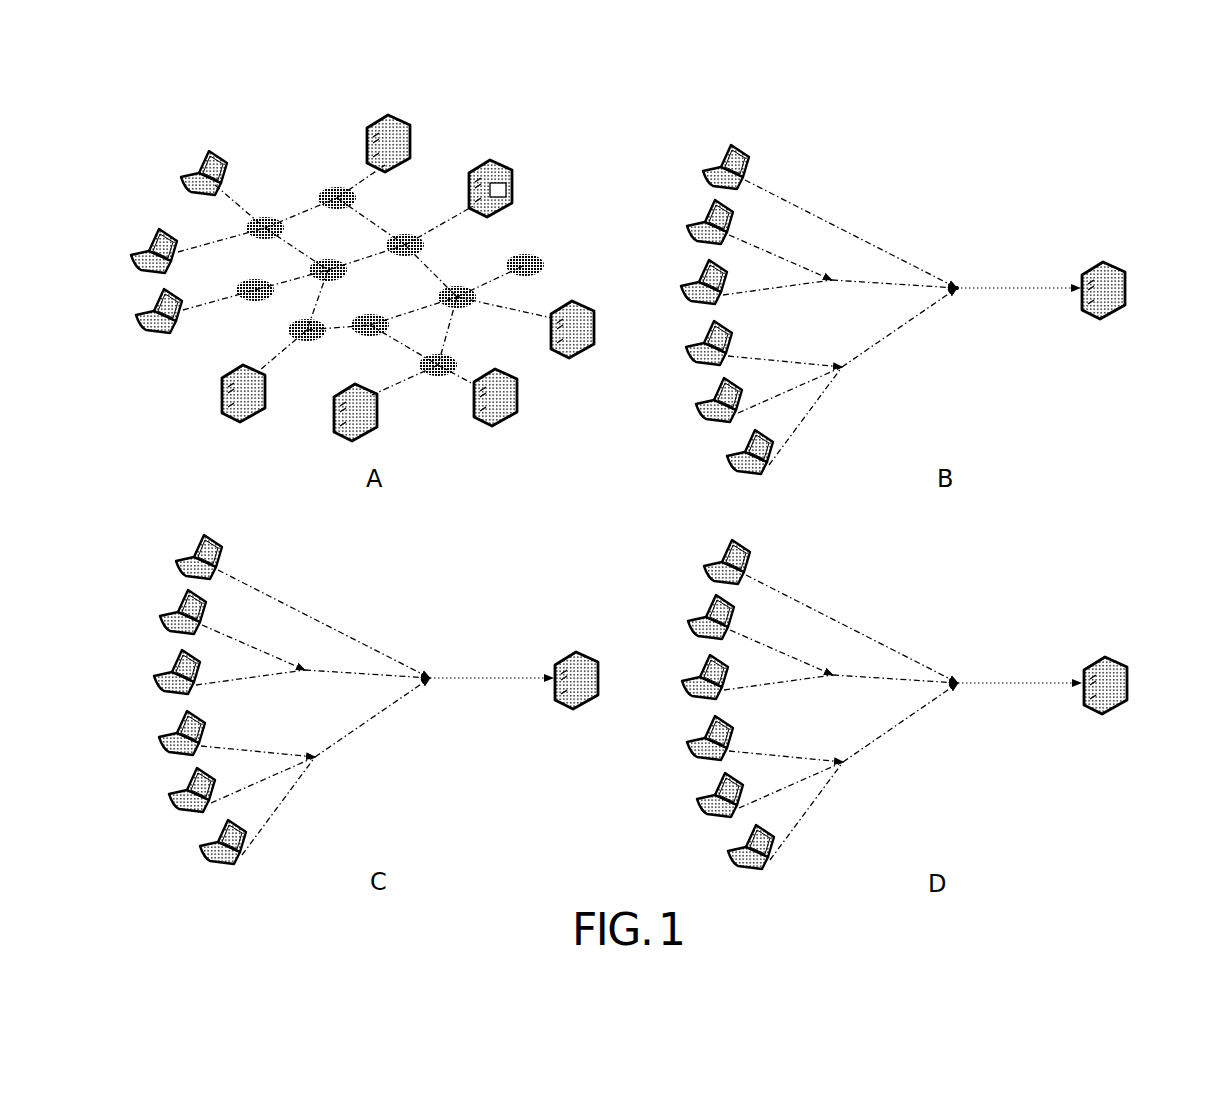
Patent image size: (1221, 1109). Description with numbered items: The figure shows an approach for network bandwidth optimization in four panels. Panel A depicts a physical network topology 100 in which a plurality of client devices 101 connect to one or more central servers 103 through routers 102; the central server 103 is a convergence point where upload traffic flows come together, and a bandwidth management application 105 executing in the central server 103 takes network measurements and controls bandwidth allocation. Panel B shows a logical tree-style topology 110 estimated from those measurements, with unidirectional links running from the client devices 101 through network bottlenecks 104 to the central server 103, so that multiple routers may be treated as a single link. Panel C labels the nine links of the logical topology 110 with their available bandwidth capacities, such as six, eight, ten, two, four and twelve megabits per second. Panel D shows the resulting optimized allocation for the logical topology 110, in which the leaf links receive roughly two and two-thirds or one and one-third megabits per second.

The physical network topology 100 is at (393, 278).
The client device 101 is at (217, 153).
The router 102 is at (268, 219).
The central server 103 is at (823, 420).
The network bottleneck 104 is at (957, 286).
The bandwidth management application 105 is at (506, 187).
The logical tree-style topology 110 is at (624, 512).